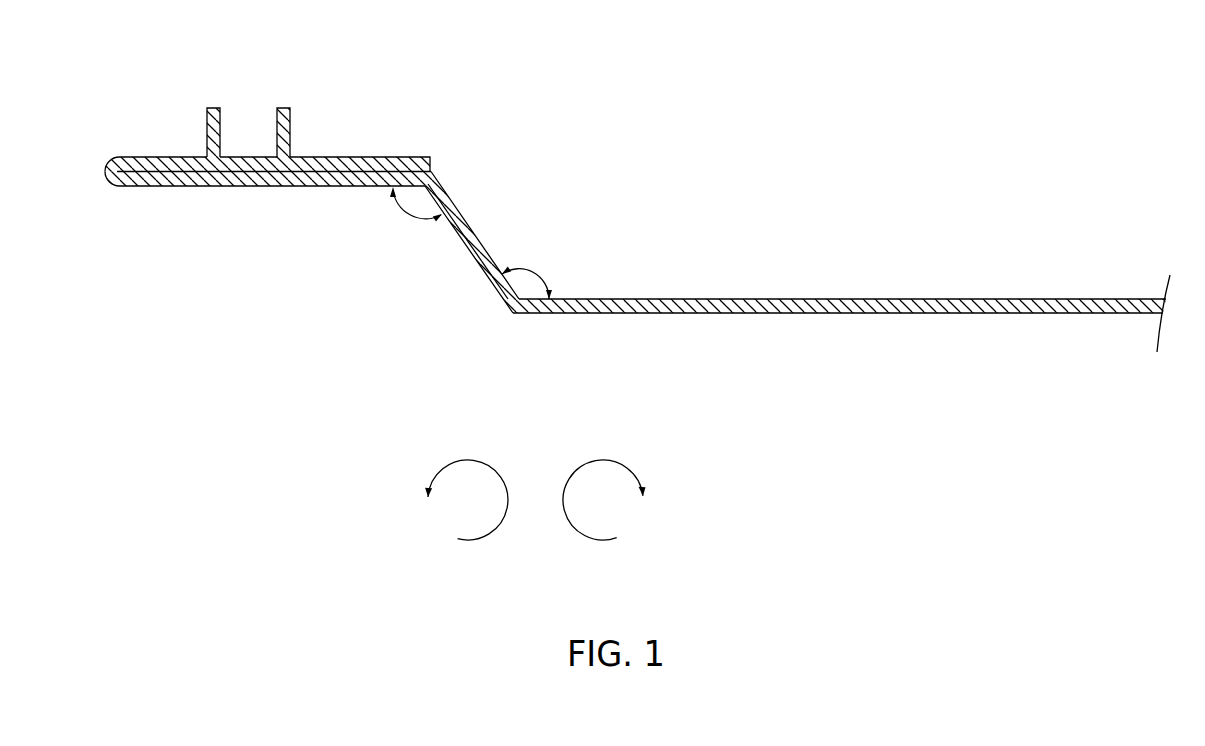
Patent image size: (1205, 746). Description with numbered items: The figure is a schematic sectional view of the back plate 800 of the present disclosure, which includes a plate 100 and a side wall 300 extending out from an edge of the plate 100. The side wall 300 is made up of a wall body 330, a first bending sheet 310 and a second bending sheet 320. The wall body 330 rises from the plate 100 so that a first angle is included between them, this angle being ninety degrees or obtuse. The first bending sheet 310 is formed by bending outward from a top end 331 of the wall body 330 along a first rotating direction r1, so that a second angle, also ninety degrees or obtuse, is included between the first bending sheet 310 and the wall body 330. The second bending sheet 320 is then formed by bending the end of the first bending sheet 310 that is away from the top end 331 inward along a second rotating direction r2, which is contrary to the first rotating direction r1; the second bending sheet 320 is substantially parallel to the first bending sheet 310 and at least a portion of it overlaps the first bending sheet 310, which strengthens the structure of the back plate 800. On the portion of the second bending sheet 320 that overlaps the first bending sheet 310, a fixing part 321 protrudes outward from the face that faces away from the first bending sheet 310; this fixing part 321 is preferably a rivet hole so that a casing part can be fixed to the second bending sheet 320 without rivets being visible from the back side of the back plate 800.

The plate 100 is at (560, 306).
The side wall 300 is at (245, 297).
The first bending sheet 310 is at (197, 175).
The second bending sheet 320 is at (153, 165).
The fixing part 321 is at (207, 153).
The wall body 330 is at (468, 242).
The top end 331 is at (450, 223).
The back plate 800 is at (227, 375).
The first rotating direction r1 is at (466, 487).
The second rotating direction r2 is at (604, 487).